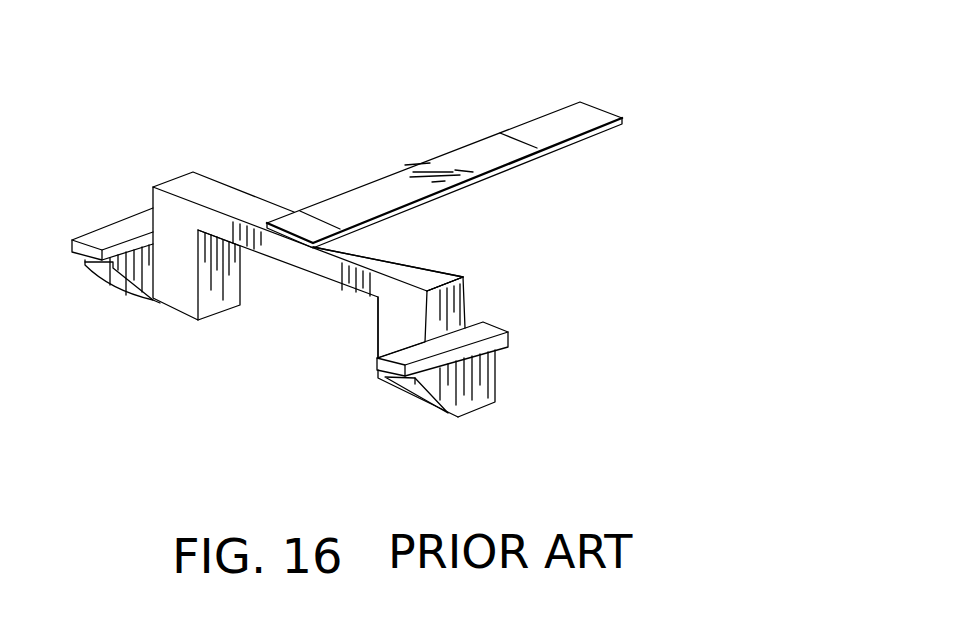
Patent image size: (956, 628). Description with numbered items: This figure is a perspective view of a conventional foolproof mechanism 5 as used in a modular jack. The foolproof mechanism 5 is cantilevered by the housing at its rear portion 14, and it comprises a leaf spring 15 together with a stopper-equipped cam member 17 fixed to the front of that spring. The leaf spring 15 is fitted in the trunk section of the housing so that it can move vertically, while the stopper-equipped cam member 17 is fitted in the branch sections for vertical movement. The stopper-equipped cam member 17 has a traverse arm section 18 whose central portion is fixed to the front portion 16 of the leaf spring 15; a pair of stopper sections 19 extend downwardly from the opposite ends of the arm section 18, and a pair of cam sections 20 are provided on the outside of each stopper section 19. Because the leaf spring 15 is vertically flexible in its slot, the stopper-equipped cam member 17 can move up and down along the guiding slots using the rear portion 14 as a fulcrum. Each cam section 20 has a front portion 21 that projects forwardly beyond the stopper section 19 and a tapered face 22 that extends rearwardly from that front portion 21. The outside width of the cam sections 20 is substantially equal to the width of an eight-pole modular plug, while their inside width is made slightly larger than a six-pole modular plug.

The foolproof mechanism 5 is at (205, 160).
The rear portion 14 is at (552, 128).
The leaf spring 15 is at (462, 165).
The front portion 16 is at (305, 225).
The stopper-equipped cam member 17 is at (447, 268).
The traverse arm section 18 is at (397, 265).
The stopper section 19 is at (378, 337).
The cam section 20 is at (493, 373).
The front portion 21 is at (405, 388).
The tapered face 22 is at (427, 410).